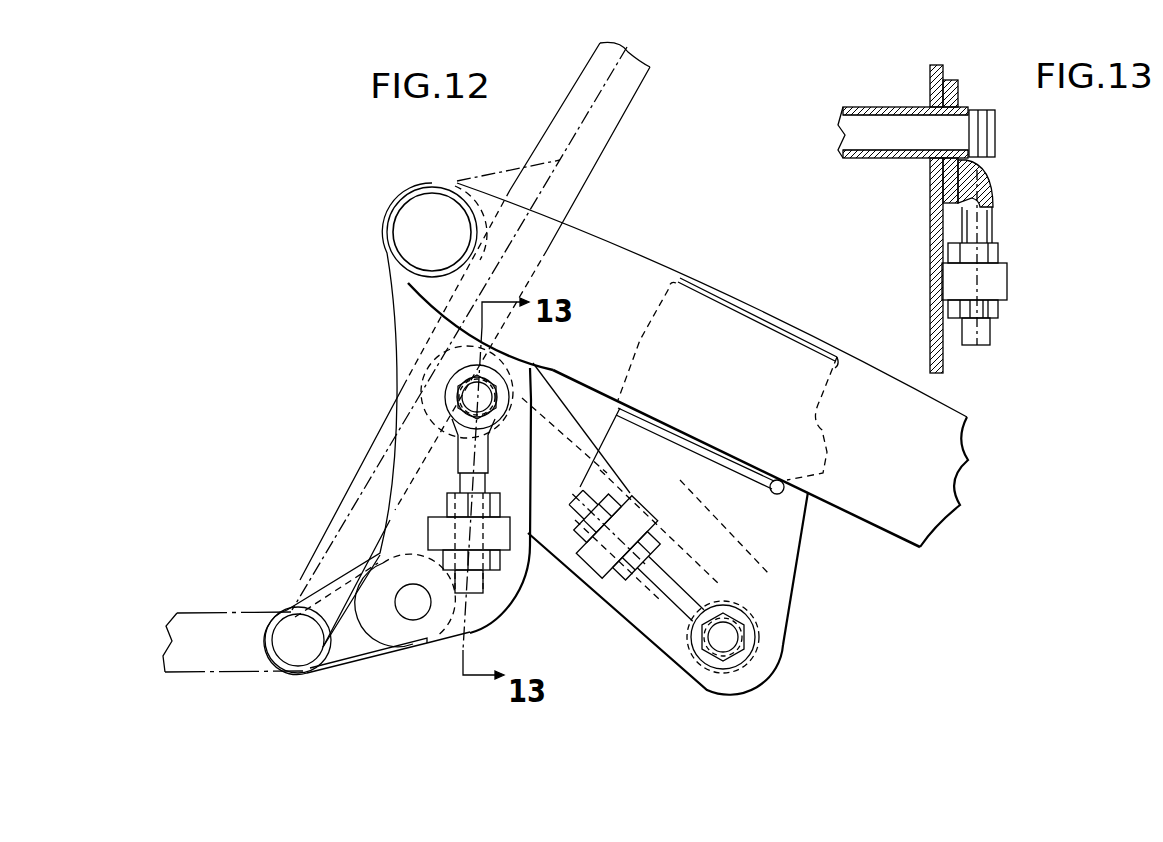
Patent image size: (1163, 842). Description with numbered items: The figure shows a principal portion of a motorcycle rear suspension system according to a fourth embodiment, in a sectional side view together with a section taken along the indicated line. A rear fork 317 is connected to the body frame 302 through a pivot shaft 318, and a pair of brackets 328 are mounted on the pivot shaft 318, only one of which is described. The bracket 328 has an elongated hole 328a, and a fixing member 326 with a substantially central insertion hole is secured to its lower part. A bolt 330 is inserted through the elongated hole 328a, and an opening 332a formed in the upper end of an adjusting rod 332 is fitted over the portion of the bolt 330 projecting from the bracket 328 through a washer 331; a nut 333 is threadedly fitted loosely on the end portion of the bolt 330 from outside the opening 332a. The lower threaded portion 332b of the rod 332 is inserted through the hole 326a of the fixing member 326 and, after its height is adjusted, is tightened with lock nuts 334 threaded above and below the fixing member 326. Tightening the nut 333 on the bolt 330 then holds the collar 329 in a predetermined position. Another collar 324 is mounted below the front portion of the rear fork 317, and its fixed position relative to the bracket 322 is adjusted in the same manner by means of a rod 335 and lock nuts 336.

In FIG. 12, the body frame 302 is at (594, 152).
In FIG. 12, the rear fork 317 is at (937, 470).
In FIG. 12, the pivot shaft 318 is at (418, 215).
In FIG. 12, the bracket 322 is at (793, 573).
In FIG. 12, the collar 324 is at (783, 640).
In FIG. 12, the fixing member 326 is at (511, 545).
In FIG. 13, the fixing member 326 is at (1007, 284).
In FIG. 12, the hole 326a is at (493, 585).
In FIG. 13, the hole 326a is at (985, 303).
In FIG. 12, the bracket 328 is at (398, 331).
In FIG. 13, the bracket 328 is at (943, 357).
In FIG. 12, the elongated hole 328a is at (468, 432).
In FIG. 13, the elongated hole 328a is at (932, 178).
In FIG. 12, the collar 329 is at (445, 400).
In FIG. 13, the collar 329 is at (870, 160).
In FIG. 13, the bolt 330 is at (875, 125).
In FIG. 13, the washer 331 is at (958, 84).
In FIG. 13, the adjusting rod 332 is at (1051, 219).
In FIG. 13, the opening 332a is at (966, 180).
In FIG. 13, the lower threaded portion 332b is at (992, 334).
In FIG. 12, the nut 333 is at (500, 383).
In FIG. 13, the nut 333 is at (982, 135).
In FIG. 12, the lock nuts 334 is at (455, 505).
In FIG. 13, the lock nuts 334 is at (998, 251).
In FIG. 12, the rod 335 is at (677, 612).
In FIG. 12, the lock nuts 336 is at (618, 508).